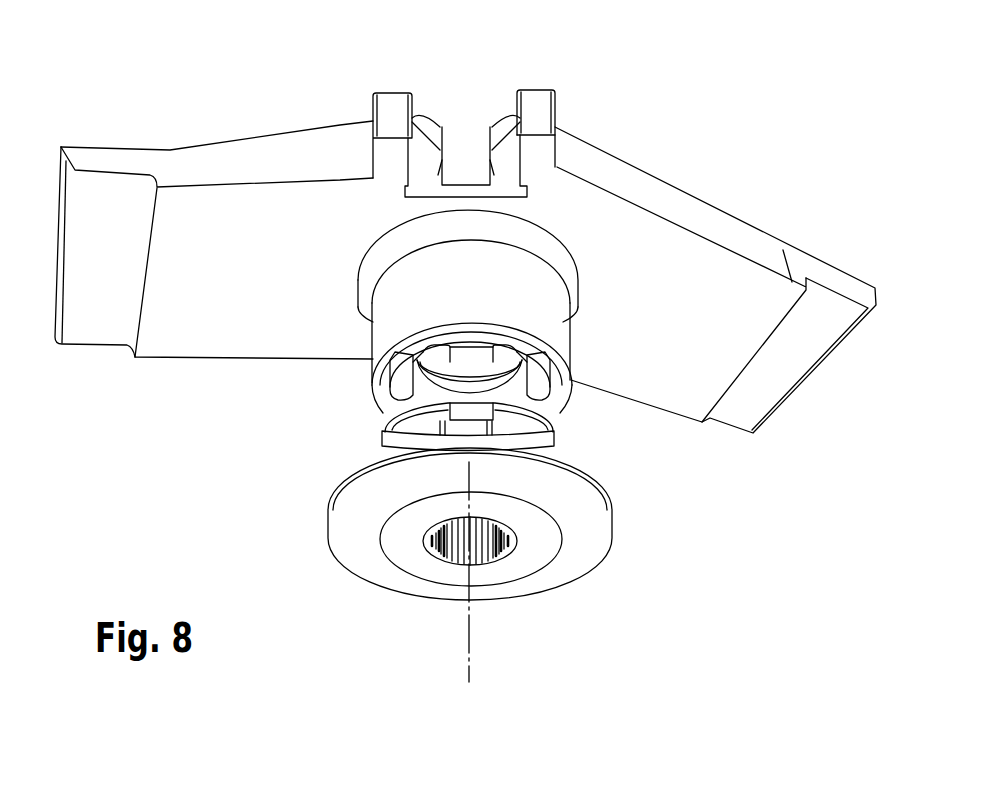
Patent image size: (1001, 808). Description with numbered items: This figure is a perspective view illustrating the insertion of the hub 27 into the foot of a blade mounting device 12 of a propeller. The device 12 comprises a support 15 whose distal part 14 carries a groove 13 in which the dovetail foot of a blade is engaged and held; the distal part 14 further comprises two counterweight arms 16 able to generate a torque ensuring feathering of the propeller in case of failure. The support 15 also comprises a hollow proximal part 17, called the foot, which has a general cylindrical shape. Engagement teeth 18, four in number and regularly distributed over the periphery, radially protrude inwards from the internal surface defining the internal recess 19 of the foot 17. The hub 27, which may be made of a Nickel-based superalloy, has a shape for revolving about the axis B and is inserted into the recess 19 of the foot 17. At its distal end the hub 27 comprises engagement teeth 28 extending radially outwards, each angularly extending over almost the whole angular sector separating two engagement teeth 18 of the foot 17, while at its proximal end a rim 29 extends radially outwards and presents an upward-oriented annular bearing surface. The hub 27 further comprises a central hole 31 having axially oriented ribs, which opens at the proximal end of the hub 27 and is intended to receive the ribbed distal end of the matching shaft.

The device 12 is at (670, 160).
The groove 13 is at (460, 98).
The distal part 14 is at (540, 103).
The support 15 is at (536, 128).
The bracket arm 16 is at (208, 168).
The hollow proximal part 17 is at (538, 301).
The engagement teeth 18 is at (543, 398).
The internal recess 19 is at (480, 386).
The hub 27 is at (379, 592).
The engagement teeth 28 is at (382, 443).
The rim 29 is at (357, 547).
The central hole 31 is at (452, 565).
The axis B is at (470, 642).